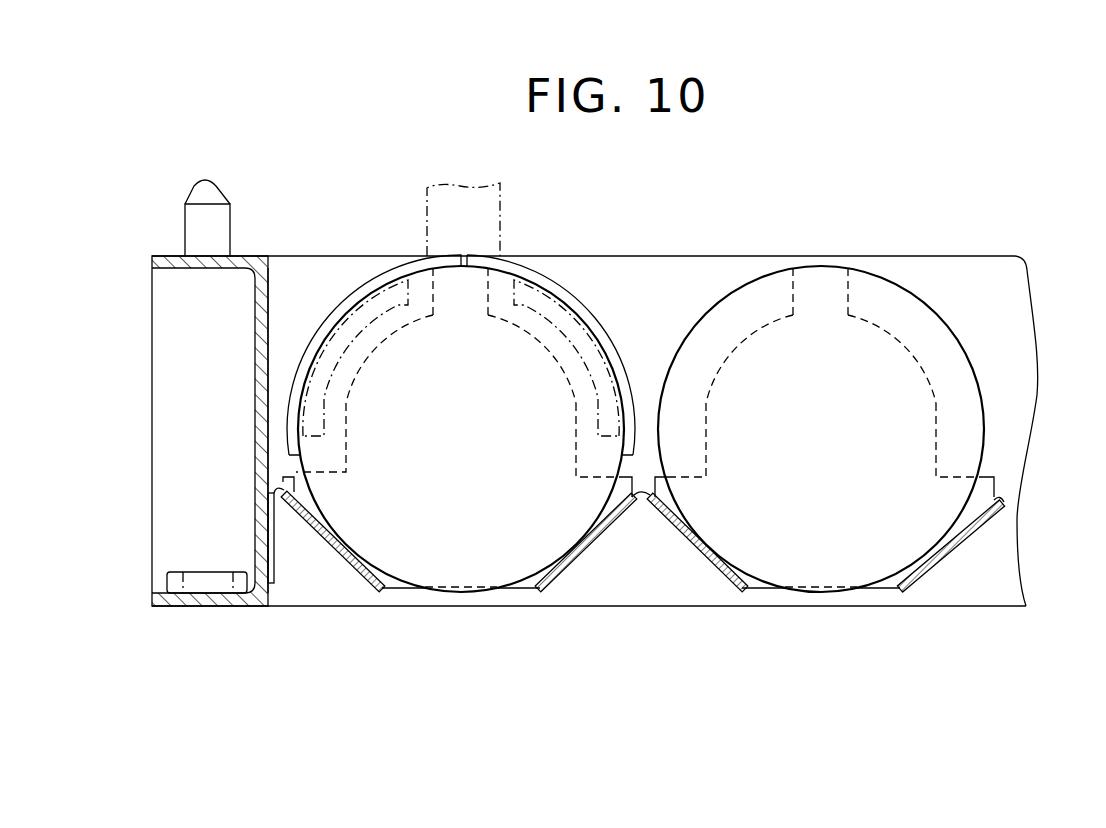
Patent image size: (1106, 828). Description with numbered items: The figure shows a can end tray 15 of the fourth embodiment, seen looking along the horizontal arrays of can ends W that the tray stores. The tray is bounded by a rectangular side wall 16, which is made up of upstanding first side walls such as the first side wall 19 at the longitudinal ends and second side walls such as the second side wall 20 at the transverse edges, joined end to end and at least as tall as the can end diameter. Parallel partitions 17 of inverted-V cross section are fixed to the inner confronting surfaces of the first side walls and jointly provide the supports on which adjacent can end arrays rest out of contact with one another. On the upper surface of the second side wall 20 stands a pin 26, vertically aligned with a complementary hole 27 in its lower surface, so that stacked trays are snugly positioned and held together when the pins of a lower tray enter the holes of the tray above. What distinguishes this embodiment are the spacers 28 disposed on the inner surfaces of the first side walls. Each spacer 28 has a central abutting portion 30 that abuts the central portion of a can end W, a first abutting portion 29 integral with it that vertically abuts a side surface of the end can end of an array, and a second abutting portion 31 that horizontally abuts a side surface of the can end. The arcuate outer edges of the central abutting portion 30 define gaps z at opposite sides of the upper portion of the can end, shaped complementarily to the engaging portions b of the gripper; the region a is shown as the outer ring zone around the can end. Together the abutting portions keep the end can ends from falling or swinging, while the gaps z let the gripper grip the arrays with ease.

The can end tray 15 is at (200, 375).
The side wall 16 is at (256, 422).
The partition 17 is at (357, 573).
The first side wall 19 is at (982, 278).
The second side wall 20 is at (256, 466).
The pin 26 is at (212, 196).
The hole 27 is at (213, 584).
The spacer 28 is at (469, 290).
The first abutting portion 29 is at (503, 353).
The central abutting portion 30 is at (483, 463).
The second abutting portion 31 is at (348, 510).
The can end W is at (490, 550).
The outer ring region a is at (338, 307).
The engaging portion b is at (328, 393).
The gap z is at (393, 311).